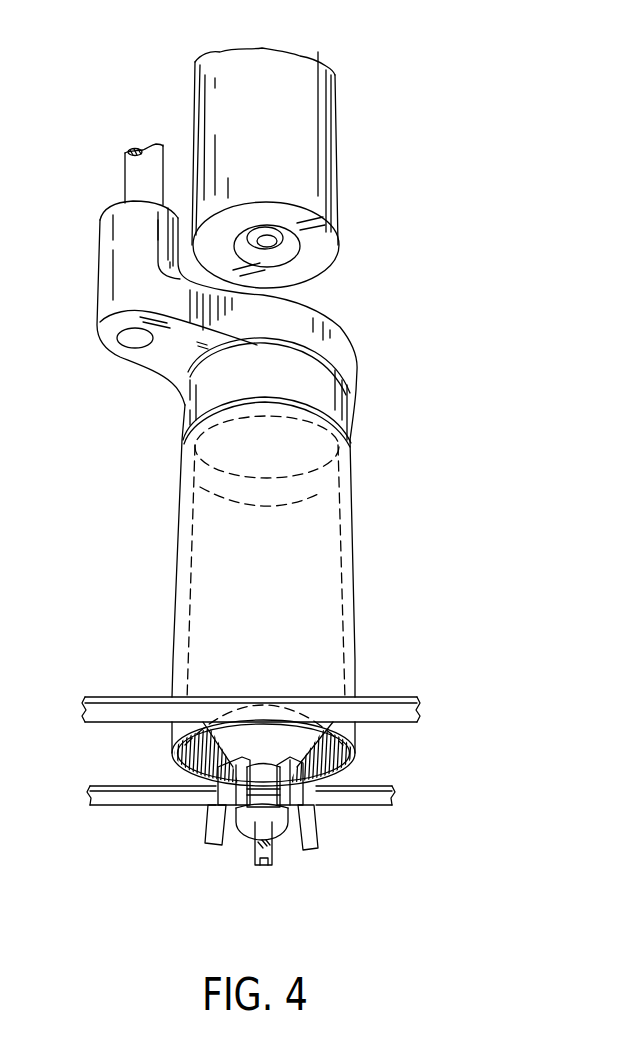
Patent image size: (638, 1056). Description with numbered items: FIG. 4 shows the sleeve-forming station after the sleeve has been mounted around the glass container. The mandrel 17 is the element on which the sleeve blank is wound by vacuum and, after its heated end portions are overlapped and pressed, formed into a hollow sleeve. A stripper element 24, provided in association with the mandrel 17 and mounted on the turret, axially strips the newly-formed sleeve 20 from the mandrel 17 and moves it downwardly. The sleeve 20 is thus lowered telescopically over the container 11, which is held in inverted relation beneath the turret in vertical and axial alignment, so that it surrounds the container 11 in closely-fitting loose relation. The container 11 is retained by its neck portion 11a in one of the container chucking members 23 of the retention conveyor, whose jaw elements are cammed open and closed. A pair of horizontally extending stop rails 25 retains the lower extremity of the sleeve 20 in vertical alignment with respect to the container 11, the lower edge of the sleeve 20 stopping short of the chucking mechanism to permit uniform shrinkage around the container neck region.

The mandrel 17 is at (338, 153).
The sleeve 20 is at (353, 553).
The stripper element 24 is at (353, 410).
The stop rails 25 is at (378, 785).
The container 11 is at (240, 735).
The neck portion 11a is at (260, 778).
The container chucking members 23 is at (203, 812).